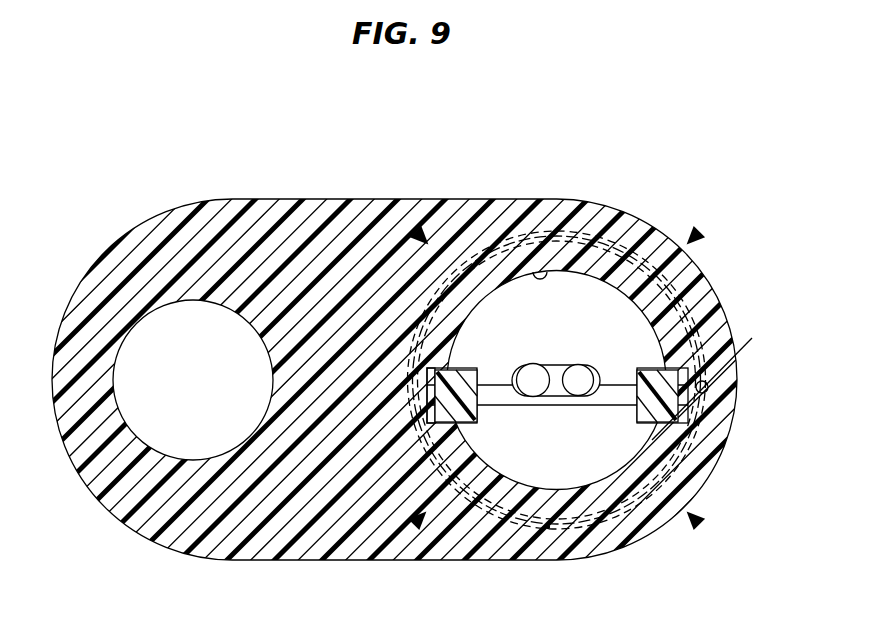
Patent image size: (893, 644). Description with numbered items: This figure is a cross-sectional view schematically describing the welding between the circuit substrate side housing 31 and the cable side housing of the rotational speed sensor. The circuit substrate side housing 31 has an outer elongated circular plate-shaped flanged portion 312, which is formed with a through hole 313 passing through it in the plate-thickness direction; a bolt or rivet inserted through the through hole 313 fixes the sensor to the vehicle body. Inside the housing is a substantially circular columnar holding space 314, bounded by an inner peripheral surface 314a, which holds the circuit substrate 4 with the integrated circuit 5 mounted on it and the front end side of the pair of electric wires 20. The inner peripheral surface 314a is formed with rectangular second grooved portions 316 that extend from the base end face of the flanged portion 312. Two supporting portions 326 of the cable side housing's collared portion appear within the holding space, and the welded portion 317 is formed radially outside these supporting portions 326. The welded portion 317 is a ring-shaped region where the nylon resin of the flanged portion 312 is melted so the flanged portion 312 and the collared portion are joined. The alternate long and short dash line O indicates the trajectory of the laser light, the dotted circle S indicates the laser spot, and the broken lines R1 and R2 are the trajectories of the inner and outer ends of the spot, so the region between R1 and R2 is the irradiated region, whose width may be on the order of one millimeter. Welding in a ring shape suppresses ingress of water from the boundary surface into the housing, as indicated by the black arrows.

The circuit substrate side housing 31 is at (582, 134).
The flanged portion 312 is at (612, 237).
The through hole 313 is at (173, 335).
The holding space 314 is at (613, 328).
The inner peripheral surface 314a is at (538, 270).
The second grooved portion 316 is at (431, 376).
The welded portion 317 is at (475, 510).
The supporting portion 326 is at (480, 420).
The circuit substrate 4 is at (617, 384).
The integrated circuit 5 is at (558, 363).
The electric wire 20 is at (533, 372).
The spot of the laser light S is at (707, 379).
The trajectory of the laser light O is at (548, 527).
The trajectory of the inner end of the laser spot R1 is at (520, 513).
The trajectory of the outer end of the laser spot R2 is at (603, 523).